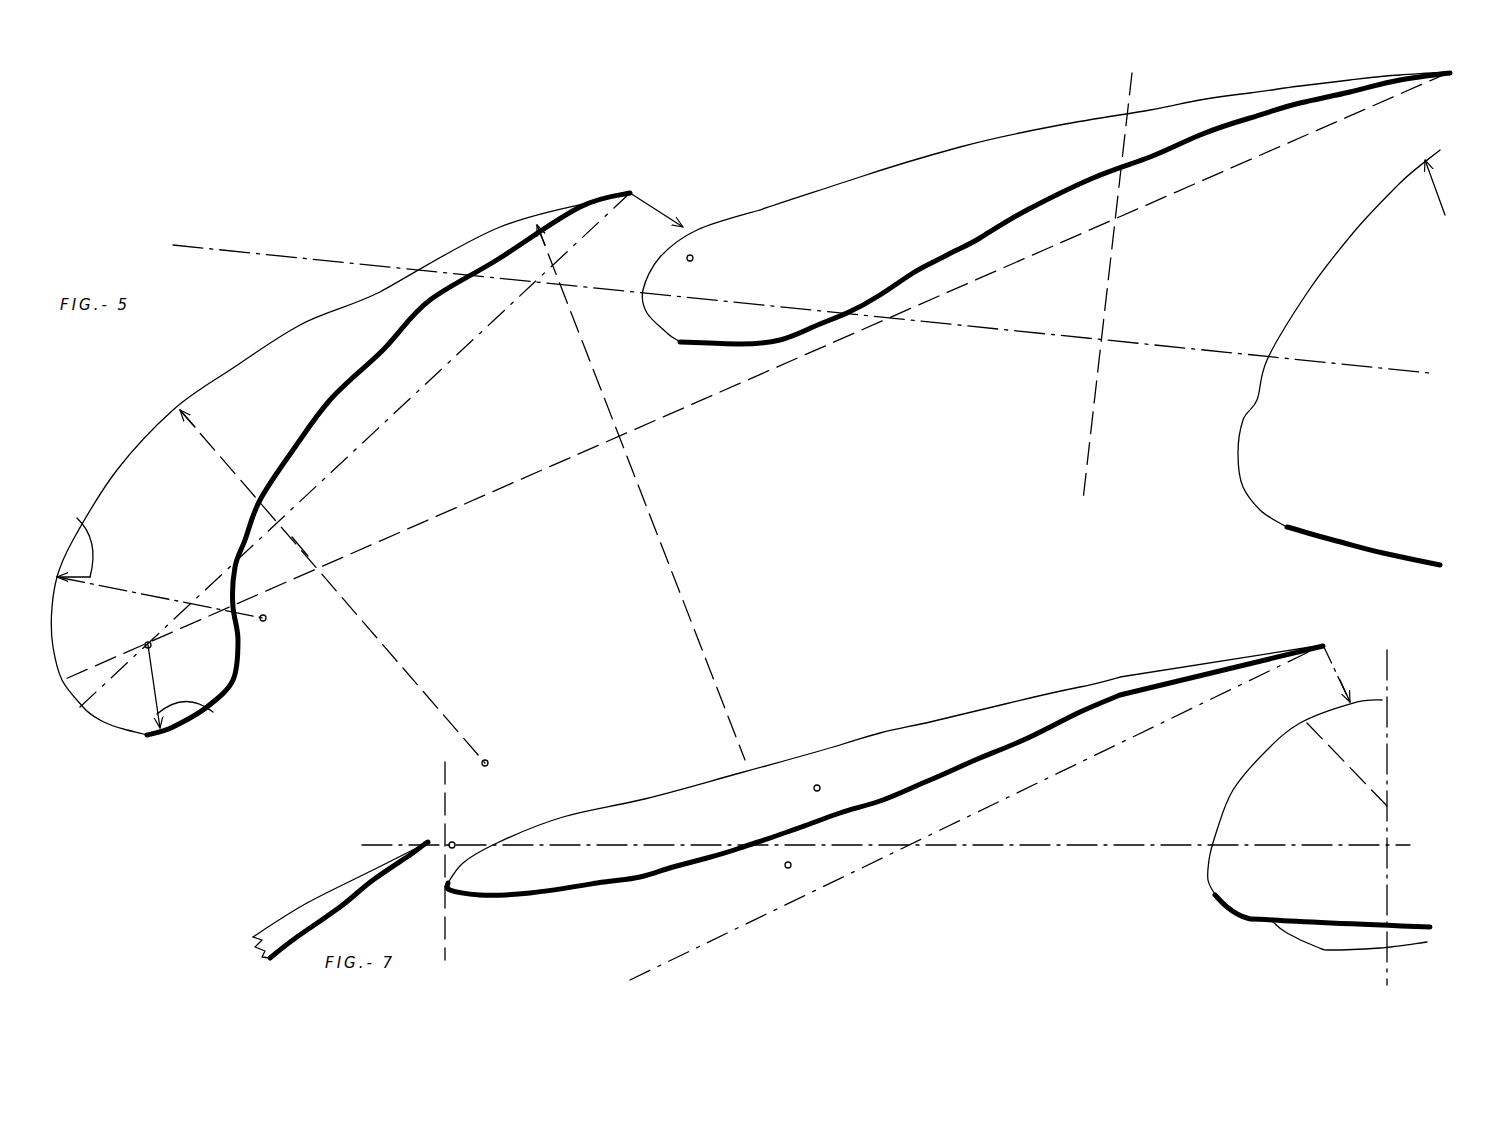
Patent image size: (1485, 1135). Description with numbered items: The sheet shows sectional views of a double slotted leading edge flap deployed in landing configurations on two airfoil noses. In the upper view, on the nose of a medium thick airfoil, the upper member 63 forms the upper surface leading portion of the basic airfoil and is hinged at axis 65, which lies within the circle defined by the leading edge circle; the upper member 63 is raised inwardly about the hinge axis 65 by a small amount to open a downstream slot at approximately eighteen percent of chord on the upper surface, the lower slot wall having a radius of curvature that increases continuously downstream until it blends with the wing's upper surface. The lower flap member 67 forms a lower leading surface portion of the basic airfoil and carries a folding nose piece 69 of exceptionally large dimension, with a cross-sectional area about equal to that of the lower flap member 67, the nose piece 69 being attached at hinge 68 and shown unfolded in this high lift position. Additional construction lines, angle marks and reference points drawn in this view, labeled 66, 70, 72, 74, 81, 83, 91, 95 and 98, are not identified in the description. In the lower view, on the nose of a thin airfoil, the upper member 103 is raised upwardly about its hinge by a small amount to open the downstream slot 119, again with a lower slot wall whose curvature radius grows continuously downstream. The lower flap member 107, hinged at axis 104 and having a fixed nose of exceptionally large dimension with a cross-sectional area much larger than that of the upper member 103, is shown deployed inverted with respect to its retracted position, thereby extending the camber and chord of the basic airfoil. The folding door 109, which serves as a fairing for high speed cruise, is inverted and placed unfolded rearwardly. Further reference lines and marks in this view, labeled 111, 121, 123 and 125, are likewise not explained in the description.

In FIG. 5, the upper member 63 is at (970, 146).
In FIG. 5, the hinge axis 65 is at (692, 256).
In FIG. 5, the intersection point 66 is at (300, 548).
In FIG. 5, the lower flap member 67 is at (260, 352).
In FIG. 5, the hinge 68 is at (488, 763).
In FIG. 5, the folding nose piece 69 is at (112, 468).
In FIG. 5, the leading edge radius 70 is at (68, 542).
In FIG. 5, the reference point 72 is at (266, 620).
In FIG. 5, the chord line 74 is at (660, 512).
In FIG. 5, the adjacent blade surface 81 is at (1440, 202).
In FIG. 5, the stagger line 83 is at (456, 510).
In FIG. 5, the construction line 91 is at (425, 380).
In FIG. 5, the angle BY 95 is at (176, 685).
In FIG. 5, the trailing edge 98 is at (652, 203).
In FIG. 7, the upper member 103 is at (641, 797).
In FIG. 7, the hinge axis 104 is at (453, 842).
In FIG. 7, the lower flap member 107 is at (318, 900).
In FIG. 7, the folding door 109 is at (1393, 955).
In FIG. 7, the trailing edge portion 111 is at (1393, 926).
In FIG. 7, the downstream slot 119 is at (1340, 675).
In FIG. 7, the leading edge arc 121 is at (1363, 774).
In FIG. 7, the chord line 123 is at (976, 812).
In FIG. 7, the axis line 125 is at (886, 831).